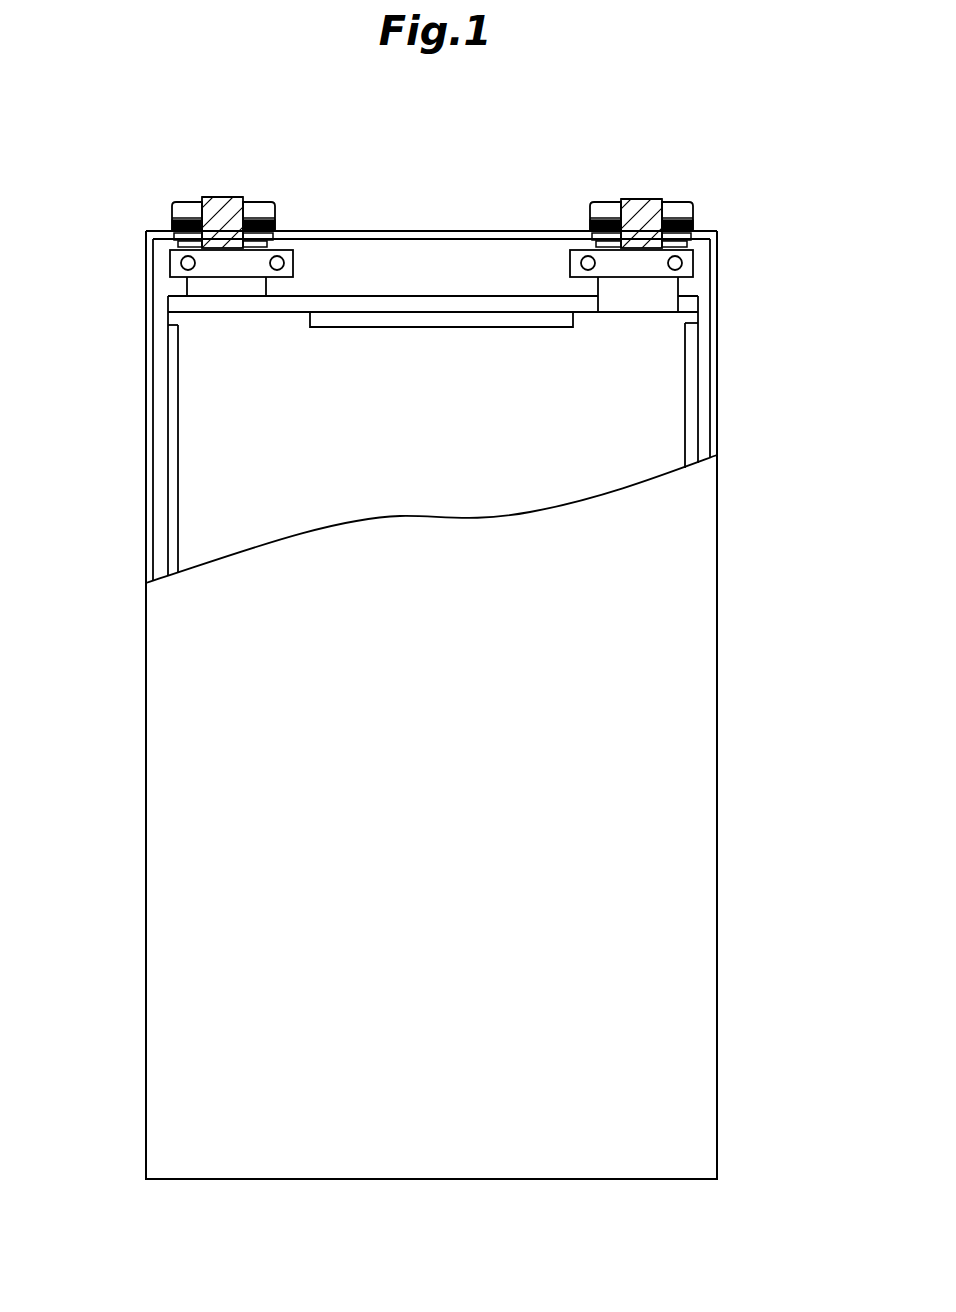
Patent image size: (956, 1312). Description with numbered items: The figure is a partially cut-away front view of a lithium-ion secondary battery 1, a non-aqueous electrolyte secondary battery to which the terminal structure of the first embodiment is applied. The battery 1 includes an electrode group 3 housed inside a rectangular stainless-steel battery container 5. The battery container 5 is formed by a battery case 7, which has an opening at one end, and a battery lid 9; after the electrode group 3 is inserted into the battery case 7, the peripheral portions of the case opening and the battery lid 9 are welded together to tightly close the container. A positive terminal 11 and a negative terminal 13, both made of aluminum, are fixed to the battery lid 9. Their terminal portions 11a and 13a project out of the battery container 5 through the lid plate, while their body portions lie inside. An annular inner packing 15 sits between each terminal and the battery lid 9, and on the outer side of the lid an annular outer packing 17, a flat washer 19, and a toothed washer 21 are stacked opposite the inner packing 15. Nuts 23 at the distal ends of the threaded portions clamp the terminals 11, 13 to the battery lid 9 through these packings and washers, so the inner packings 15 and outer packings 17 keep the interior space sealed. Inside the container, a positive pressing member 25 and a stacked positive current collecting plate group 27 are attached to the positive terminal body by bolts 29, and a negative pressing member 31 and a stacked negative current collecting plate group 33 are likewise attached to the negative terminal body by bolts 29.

The lithium-ion secondary battery 1 is at (126, 840).
The electrode group 3 is at (213, 443).
The battery container 5 is at (695, 650).
The battery case 7 is at (424, 1168).
The battery lid 9 is at (460, 230).
The positive terminal 11 is at (640, 198).
The terminal portion 11a is at (632, 198).
The negative terminal 13 is at (222, 196).
The terminal portion 13a is at (230, 207).
The inner packing 15 is at (172, 243).
The outer packing 17 is at (272, 224).
The flat washer 19 is at (178, 222).
The toothed washer 21 is at (192, 205).
The nut 23 is at (263, 205).
The positive pressing member 25 is at (685, 270).
The positive current collecting plate group 27 is at (667, 298).
The bolt 29 is at (188, 270).
The negative pressing member 31 is at (173, 268).
The negative current collecting plate group 33 is at (196, 288).